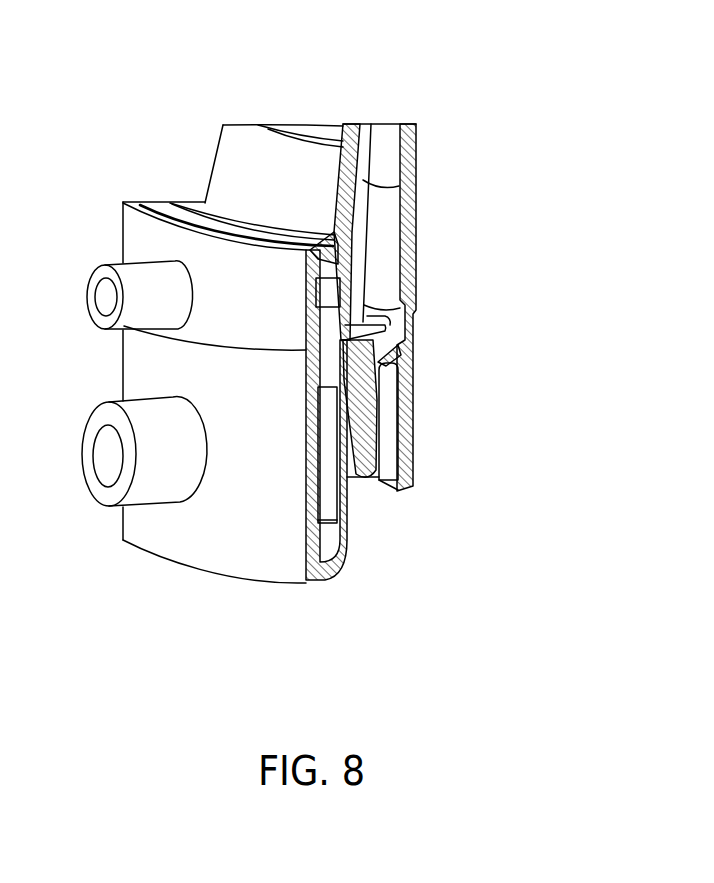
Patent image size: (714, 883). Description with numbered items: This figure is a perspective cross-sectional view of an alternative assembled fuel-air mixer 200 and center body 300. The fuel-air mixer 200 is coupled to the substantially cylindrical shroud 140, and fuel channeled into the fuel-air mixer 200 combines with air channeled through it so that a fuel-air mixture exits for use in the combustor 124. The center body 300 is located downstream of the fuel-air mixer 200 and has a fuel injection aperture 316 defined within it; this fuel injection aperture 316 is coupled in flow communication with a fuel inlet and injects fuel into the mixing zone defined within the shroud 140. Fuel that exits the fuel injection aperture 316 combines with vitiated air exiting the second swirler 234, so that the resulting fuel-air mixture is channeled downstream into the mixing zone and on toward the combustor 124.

The combustor 124 is at (108, 92).
The shroud 140 is at (210, 167).
The fuel-air mixer 200 is at (358, 541).
The center body 300 is at (460, 135).
The fuel injection aperture 316 is at (375, 295).
The second swirler 234 is at (397, 498).